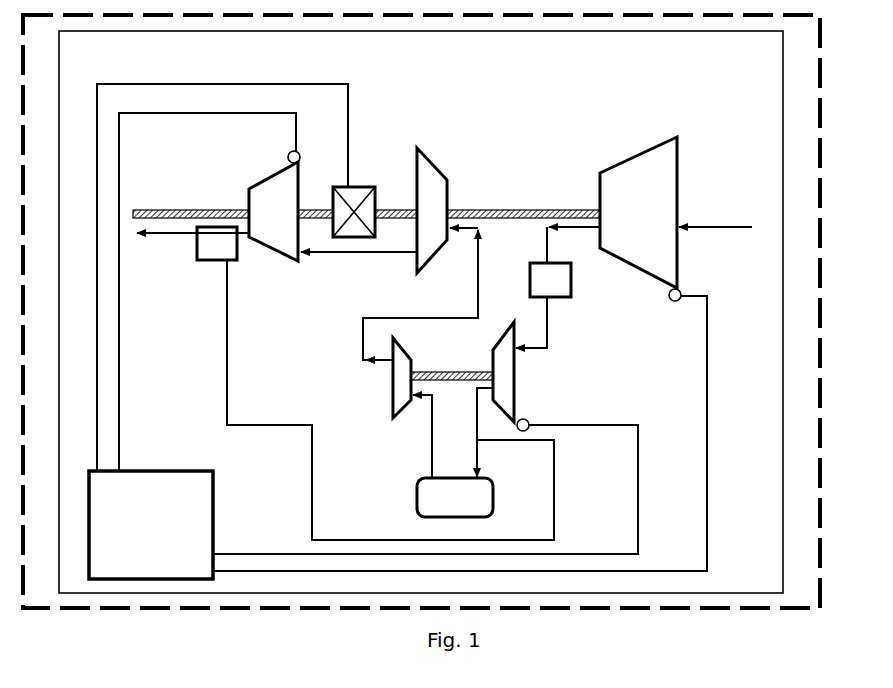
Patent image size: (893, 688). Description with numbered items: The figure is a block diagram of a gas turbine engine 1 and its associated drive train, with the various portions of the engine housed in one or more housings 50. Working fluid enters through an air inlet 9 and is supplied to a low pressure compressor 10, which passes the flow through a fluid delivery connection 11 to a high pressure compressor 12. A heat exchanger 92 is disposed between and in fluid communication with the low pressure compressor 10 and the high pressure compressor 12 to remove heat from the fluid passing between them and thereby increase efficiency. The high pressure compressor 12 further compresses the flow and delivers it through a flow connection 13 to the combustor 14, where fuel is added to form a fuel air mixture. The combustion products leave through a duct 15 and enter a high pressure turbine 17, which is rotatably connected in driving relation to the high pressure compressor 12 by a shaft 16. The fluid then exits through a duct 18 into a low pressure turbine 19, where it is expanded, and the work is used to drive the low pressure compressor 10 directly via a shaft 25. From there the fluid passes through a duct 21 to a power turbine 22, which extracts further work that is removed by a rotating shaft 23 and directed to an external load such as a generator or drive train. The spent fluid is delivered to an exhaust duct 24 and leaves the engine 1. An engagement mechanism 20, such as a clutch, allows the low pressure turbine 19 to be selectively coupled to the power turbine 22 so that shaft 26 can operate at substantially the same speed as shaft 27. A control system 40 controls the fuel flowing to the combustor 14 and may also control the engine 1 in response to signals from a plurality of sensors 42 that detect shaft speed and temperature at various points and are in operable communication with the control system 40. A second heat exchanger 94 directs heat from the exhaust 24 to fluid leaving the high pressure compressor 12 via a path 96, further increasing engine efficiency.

The gas turbine engine 1 is at (826, 351).
The air inlet 9 is at (706, 222).
The low pressure compressor 10 is at (681, 199).
The fluid delivery connection 11 is at (550, 335).
The high pressure compressor 12 is at (518, 392).
The flow connection 13 is at (483, 452).
The combustor 14 is at (413, 492).
The duct 15 is at (428, 411).
The shaft 16 is at (472, 371).
The high pressure turbine 17 is at (390, 402).
The duct 18 is at (474, 271).
The low pressure turbine 19 is at (437, 169).
The engagement mechanism 20 is at (361, 185).
The duct 21 is at (321, 256).
The power turbine 22 is at (252, 261).
The rotating shaft 23 is at (234, 210).
The exhaust duct 24 is at (180, 256).
The shaft 25 is at (468, 205).
The shaft 26 is at (310, 200).
The shaft 27 is at (390, 200).
The control system 40 is at (173, 467).
The sensors 42 is at (287, 153).
The housing 50 is at (778, 85).
The heat exchanger 92 is at (574, 280).
The heat exchanger 94 is at (210, 265).
The path 96 is at (225, 348).